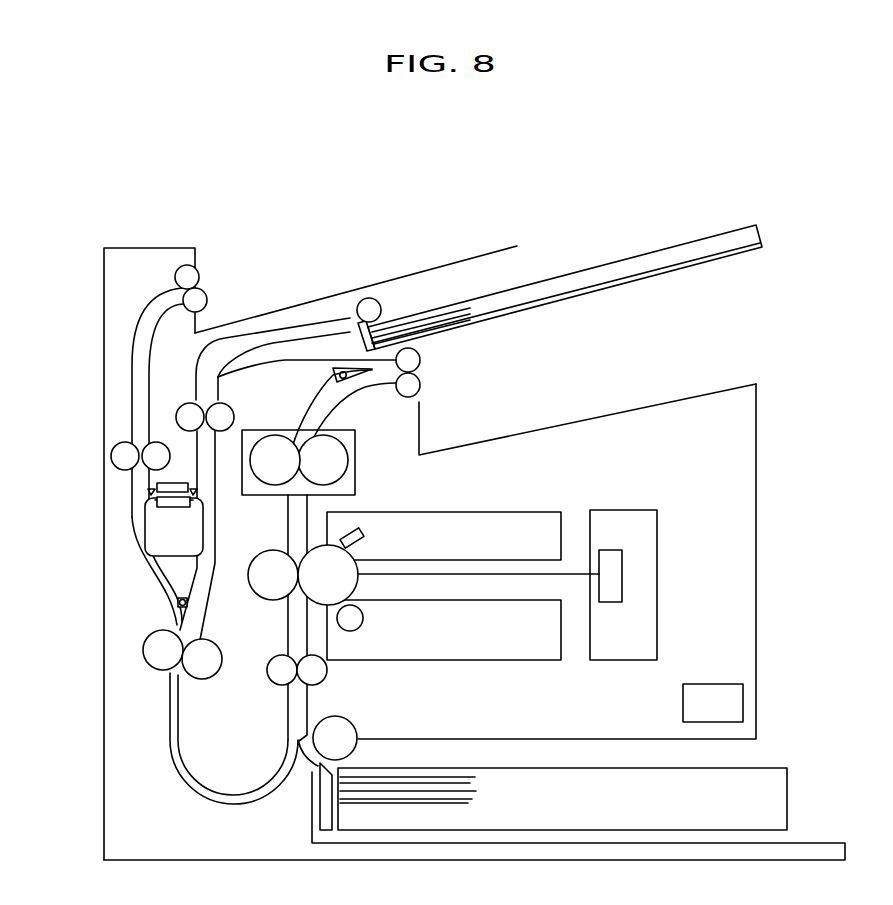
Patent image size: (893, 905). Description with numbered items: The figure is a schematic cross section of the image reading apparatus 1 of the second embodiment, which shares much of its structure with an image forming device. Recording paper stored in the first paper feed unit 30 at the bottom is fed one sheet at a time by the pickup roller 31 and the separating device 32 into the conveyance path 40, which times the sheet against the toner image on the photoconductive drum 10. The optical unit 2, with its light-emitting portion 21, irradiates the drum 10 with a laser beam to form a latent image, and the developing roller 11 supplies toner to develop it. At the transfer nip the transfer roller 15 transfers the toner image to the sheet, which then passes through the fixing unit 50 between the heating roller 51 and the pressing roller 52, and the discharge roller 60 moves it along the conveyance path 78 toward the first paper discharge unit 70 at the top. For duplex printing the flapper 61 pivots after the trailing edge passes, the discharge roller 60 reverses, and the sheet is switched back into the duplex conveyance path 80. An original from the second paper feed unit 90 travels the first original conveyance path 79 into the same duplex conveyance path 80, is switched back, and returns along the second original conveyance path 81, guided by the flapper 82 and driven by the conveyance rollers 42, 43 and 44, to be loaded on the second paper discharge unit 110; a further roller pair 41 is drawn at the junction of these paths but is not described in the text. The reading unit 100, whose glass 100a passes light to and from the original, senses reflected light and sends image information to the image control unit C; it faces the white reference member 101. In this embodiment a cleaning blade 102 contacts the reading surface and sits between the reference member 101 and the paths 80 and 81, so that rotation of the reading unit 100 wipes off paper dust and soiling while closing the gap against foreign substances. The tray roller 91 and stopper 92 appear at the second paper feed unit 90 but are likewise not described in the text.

The image reading apparatus 1 is at (757, 512).
The optical unit 2 is at (624, 510).
The photoconductive drum 10 is at (345, 560).
The developing roller 11 is at (360, 620).
The transfer roller 15 is at (263, 598).
The light-emitting portion 21 is at (623, 580).
The first paper feed unit 30 is at (805, 843).
The pickup roller 31 is at (346, 730).
The separating device 32 is at (325, 820).
The conveyance path 40 is at (320, 672).
The conveyance roller pair 41 is at (176, 418).
The conveyance roller 42 is at (152, 650).
The conveyance roller 43 is at (118, 458).
The conveyance roller 44 is at (192, 275).
The fixing unit 50 is at (355, 486).
The heating roller 51 is at (346, 458).
The pressing roller 52 is at (272, 478).
The discharge roller 60 is at (412, 360).
The flapper 61 is at (348, 382).
The first paper discharge unit 70 is at (640, 406).
The conveyance path 78 is at (306, 697).
The first original conveyance path 79 is at (272, 333).
The duplex conveyance path 80 is at (230, 447).
The second original conveyance path 81 is at (137, 368).
The flapper 82 is at (178, 612).
The second paper feed unit 90 is at (615, 283).
The tray roller 91 is at (369, 310).
The tray stopper 92 is at (360, 335).
The reading unit 100 is at (175, 545).
The glass 100a is at (175, 517).
The white reference member 101 is at (168, 500).
The cleaning blade 102 is at (160, 487).
The second paper discharge unit 110 is at (381, 281).
The image control unit C is at (735, 705).